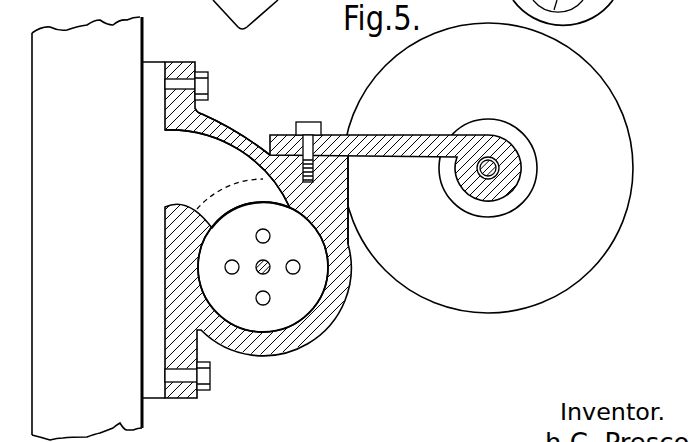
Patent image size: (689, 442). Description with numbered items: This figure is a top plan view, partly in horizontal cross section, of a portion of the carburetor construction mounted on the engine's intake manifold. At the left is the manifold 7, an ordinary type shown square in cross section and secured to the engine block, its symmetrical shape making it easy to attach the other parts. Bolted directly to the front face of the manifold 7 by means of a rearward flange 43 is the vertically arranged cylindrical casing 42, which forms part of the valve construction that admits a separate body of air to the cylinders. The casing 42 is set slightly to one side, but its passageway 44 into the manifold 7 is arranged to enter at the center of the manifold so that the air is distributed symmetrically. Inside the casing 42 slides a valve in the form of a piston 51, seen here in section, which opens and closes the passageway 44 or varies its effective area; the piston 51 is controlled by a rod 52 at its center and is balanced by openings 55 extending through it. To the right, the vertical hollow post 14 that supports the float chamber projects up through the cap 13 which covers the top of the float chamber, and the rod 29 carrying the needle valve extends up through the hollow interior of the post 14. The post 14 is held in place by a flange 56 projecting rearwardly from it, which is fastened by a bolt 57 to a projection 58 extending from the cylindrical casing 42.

The manifold 7 is at (122, 397).
The cap 13 is at (628, 136).
The vertical hollow post 14 is at (520, 163).
The rod 29 is at (495, 173).
The cylindrical casing 42 is at (334, 312).
The flange 43 is at (200, 355).
The passageway 44 is at (188, 160).
The piston 51 is at (303, 305).
The rod 52 is at (270, 262).
The openings 55 is at (257, 295).
The flange 56 is at (342, 135).
The bolt 57 is at (307, 125).
The projection 58 is at (350, 195).